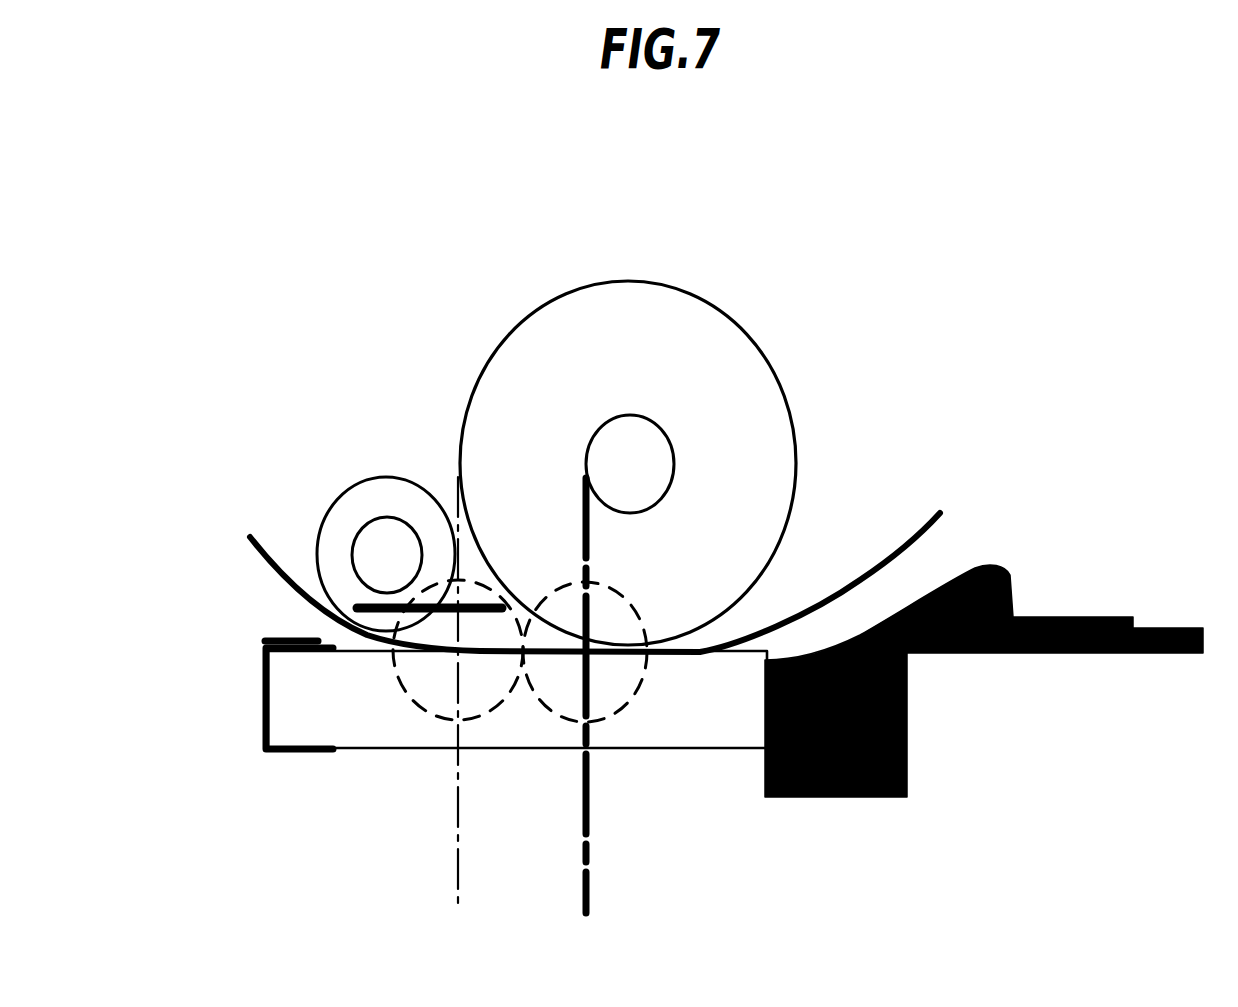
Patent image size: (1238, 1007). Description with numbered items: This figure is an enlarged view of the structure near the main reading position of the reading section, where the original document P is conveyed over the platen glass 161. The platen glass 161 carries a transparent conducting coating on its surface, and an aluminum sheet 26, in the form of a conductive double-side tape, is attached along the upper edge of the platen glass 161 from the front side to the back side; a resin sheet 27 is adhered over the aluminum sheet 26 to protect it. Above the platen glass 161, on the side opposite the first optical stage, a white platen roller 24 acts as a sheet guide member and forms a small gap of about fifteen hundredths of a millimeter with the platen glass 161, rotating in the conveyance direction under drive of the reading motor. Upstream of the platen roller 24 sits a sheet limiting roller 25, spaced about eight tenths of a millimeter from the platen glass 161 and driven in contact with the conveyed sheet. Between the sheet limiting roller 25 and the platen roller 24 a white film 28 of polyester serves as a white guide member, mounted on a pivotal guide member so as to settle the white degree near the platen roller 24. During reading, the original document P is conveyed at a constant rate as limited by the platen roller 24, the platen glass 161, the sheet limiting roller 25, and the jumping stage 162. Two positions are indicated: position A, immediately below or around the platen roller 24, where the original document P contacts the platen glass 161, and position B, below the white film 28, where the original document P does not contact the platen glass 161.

The platen roller 24 is at (770, 455).
The sheet limiting roller 25 is at (343, 512).
The white film 28 is at (425, 598).
The aluminum sheet 26 is at (266, 665).
The resin sheet 27 is at (283, 637).
The platen glass 161 is at (390, 730).
The jumping stage 162 is at (913, 727).
The original document P is at (883, 557).
The position A is at (617, 697).
The position B is at (473, 703).